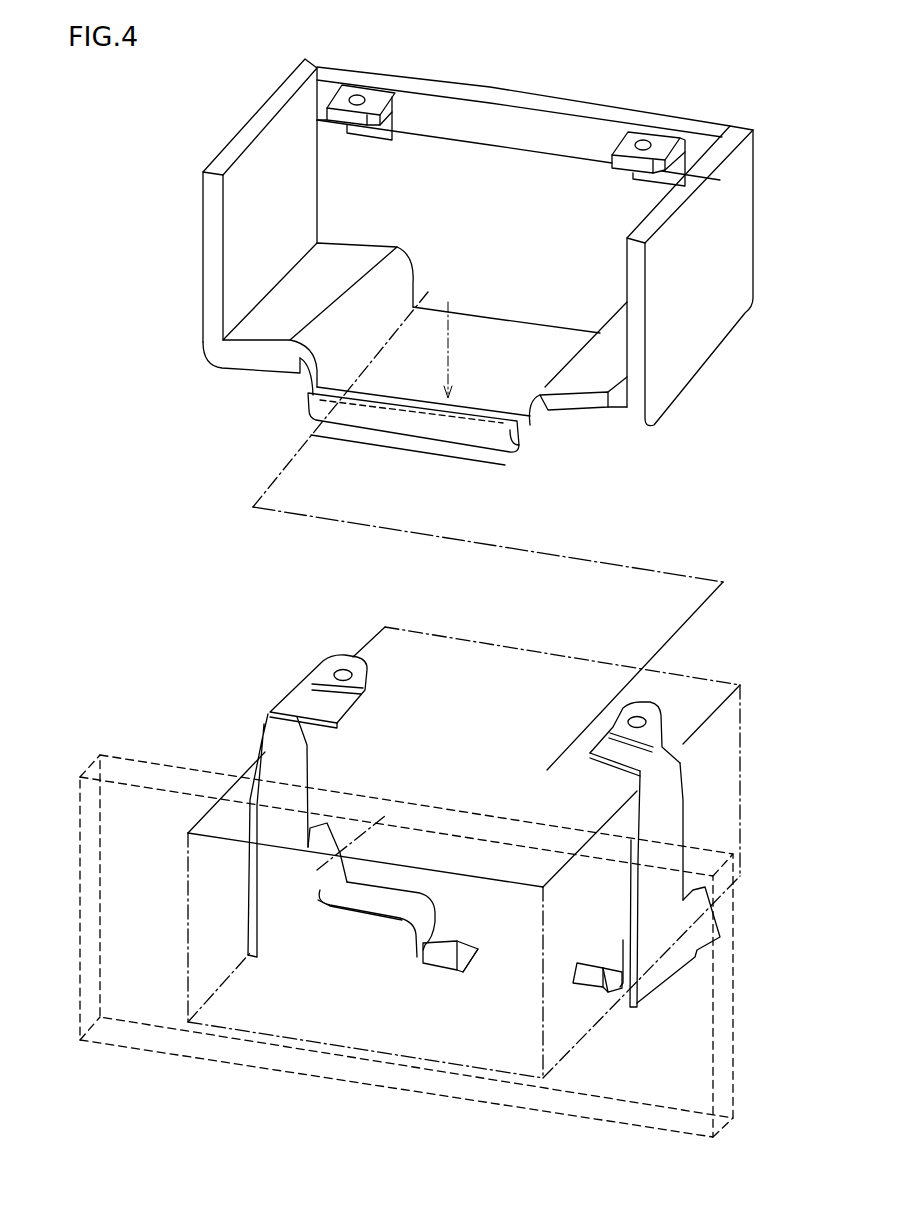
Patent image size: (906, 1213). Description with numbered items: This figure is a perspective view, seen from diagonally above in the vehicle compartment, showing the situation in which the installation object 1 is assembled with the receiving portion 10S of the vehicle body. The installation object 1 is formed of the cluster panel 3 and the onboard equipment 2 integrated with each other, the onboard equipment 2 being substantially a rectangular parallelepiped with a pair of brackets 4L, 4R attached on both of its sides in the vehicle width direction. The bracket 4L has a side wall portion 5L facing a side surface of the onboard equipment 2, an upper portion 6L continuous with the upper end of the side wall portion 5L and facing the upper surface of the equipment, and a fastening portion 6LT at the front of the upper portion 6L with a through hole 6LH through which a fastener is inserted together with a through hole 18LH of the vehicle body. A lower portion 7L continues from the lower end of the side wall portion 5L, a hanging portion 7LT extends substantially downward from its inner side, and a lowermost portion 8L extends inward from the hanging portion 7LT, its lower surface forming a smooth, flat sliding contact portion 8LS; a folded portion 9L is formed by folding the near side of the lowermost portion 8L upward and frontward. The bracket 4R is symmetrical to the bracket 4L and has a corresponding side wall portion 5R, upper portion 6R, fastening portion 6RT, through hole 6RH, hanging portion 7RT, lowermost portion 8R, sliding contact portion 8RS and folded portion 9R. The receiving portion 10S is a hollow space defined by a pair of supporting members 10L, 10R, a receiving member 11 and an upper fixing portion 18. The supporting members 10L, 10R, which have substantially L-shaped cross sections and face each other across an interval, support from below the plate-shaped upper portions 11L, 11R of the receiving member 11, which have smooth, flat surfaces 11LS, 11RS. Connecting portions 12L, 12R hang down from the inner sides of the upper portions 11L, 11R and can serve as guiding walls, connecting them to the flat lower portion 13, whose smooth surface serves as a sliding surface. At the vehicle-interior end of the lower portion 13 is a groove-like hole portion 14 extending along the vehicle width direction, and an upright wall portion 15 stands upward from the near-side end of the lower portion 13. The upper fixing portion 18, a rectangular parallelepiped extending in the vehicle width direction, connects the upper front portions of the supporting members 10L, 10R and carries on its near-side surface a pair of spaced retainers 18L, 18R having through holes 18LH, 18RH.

The installation object 1 is at (198, 700).
The onboard equipment 2 is at (255, 768).
The cluster panel 3 is at (165, 775).
The bracket 4L is at (363, 808).
The bracket 4R is at (670, 832).
The side wall portion 5L is at (293, 767).
The side wall portion 5R is at (667, 837).
The upper portion 6L is at (293, 658).
The upper portion 6R is at (690, 710).
The fastening portion 6LT is at (327, 673).
The fastening portion 6RT is at (650, 727).
The through hole 6LH is at (343, 673).
The through hole 6RH is at (641, 721).
The lower portion 7L is at (383, 898).
The hanging portion 7LT is at (417, 932).
The hanging portion 7RT is at (622, 980).
The lowermost portion 8L is at (463, 950).
The lowermost portion 8R is at (610, 980).
The sliding contact portion 8LS is at (457, 973).
The sliding contact portion 8RS is at (612, 993).
The folded portion 9L is at (440, 950).
The folded portion 9R is at (578, 973).
The supporting member 10L is at (203, 241).
The supporting member 10R is at (685, 315).
The receiving portion 10S is at (500, 214).
The receiving member 11 is at (548, 313).
The upper portion 11L is at (283, 347).
The upper portion 11R is at (578, 397).
The surface 11LS is at (327, 303).
The surface 11RS is at (588, 367).
The connecting portion 12L is at (310, 365).
The connecting portion 12R is at (538, 403).
The lower portion 13 is at (487, 353).
The hole portion 14 is at (453, 400).
The upright wall portion 15 is at (400, 422).
The upper fixing portion 18 is at (555, 135).
The retainer 18L is at (338, 100).
The retainer 18R is at (627, 147).
The through hole 18LH is at (358, 97).
The through hole 18RH is at (645, 143).